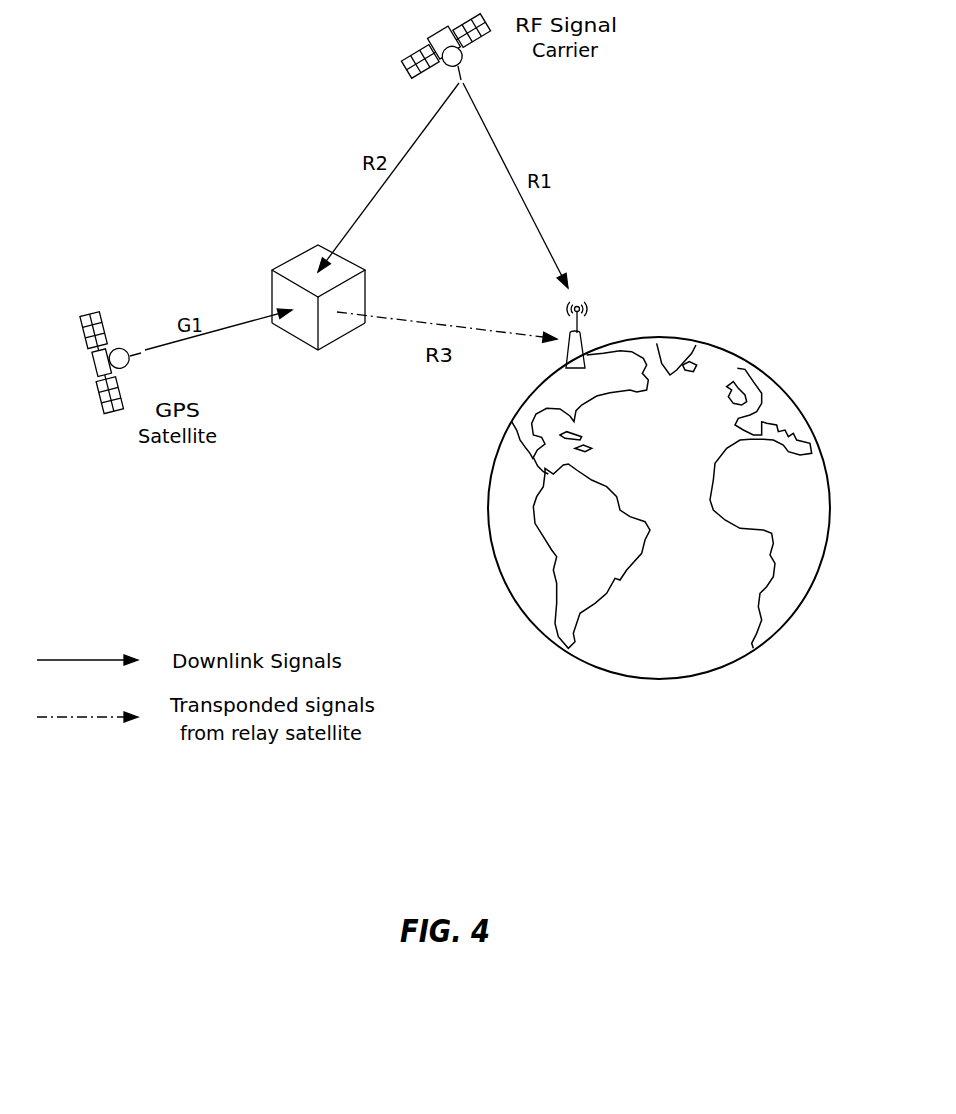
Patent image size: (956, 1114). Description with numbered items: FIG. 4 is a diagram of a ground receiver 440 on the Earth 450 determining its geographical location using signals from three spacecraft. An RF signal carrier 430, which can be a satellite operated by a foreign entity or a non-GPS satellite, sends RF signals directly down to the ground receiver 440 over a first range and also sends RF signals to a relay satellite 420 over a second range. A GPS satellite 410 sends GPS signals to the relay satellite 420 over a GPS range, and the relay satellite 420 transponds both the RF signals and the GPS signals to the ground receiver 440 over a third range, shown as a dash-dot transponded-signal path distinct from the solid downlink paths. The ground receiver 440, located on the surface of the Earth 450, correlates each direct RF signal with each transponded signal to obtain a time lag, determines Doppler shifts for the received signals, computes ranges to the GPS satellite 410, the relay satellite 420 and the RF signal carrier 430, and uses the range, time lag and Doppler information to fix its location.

The GPS satellite 410 is at (91, 314).
The relay satellite 420 is at (289, 260).
The RF signal carrier 430 is at (403, 61).
The ground receiver 440 is at (590, 348).
The Earth 450 is at (790, 397).